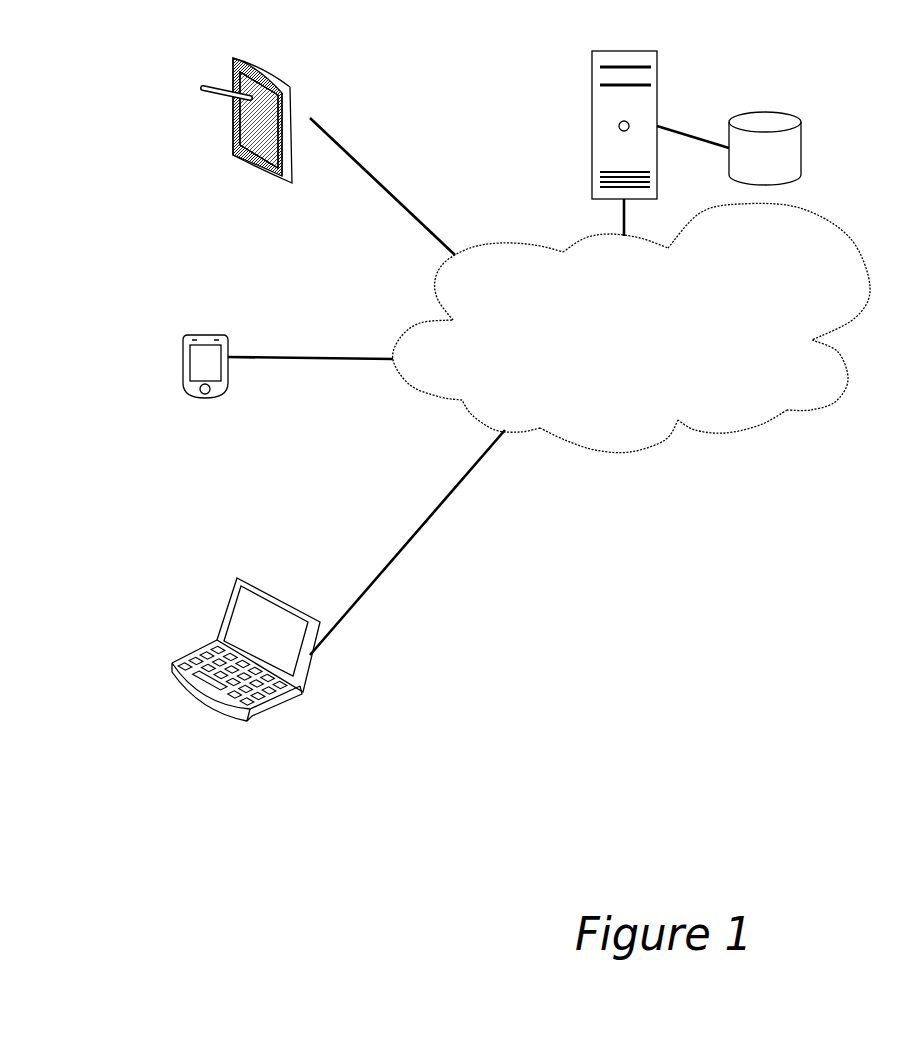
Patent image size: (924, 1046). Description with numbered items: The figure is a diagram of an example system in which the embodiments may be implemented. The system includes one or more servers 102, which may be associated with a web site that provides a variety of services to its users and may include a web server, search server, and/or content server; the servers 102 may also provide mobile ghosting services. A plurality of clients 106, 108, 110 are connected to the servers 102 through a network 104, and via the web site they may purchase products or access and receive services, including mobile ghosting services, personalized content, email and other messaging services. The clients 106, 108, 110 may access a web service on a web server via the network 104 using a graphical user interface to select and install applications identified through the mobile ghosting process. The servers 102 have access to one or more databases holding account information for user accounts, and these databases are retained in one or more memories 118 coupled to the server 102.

The servers 102 is at (660, 75).
The network 104 is at (631, 327).
The client 106 is at (197, 100).
The client 108 is at (177, 352).
The client 110 is at (197, 637).
The memories 118 is at (815, 147).